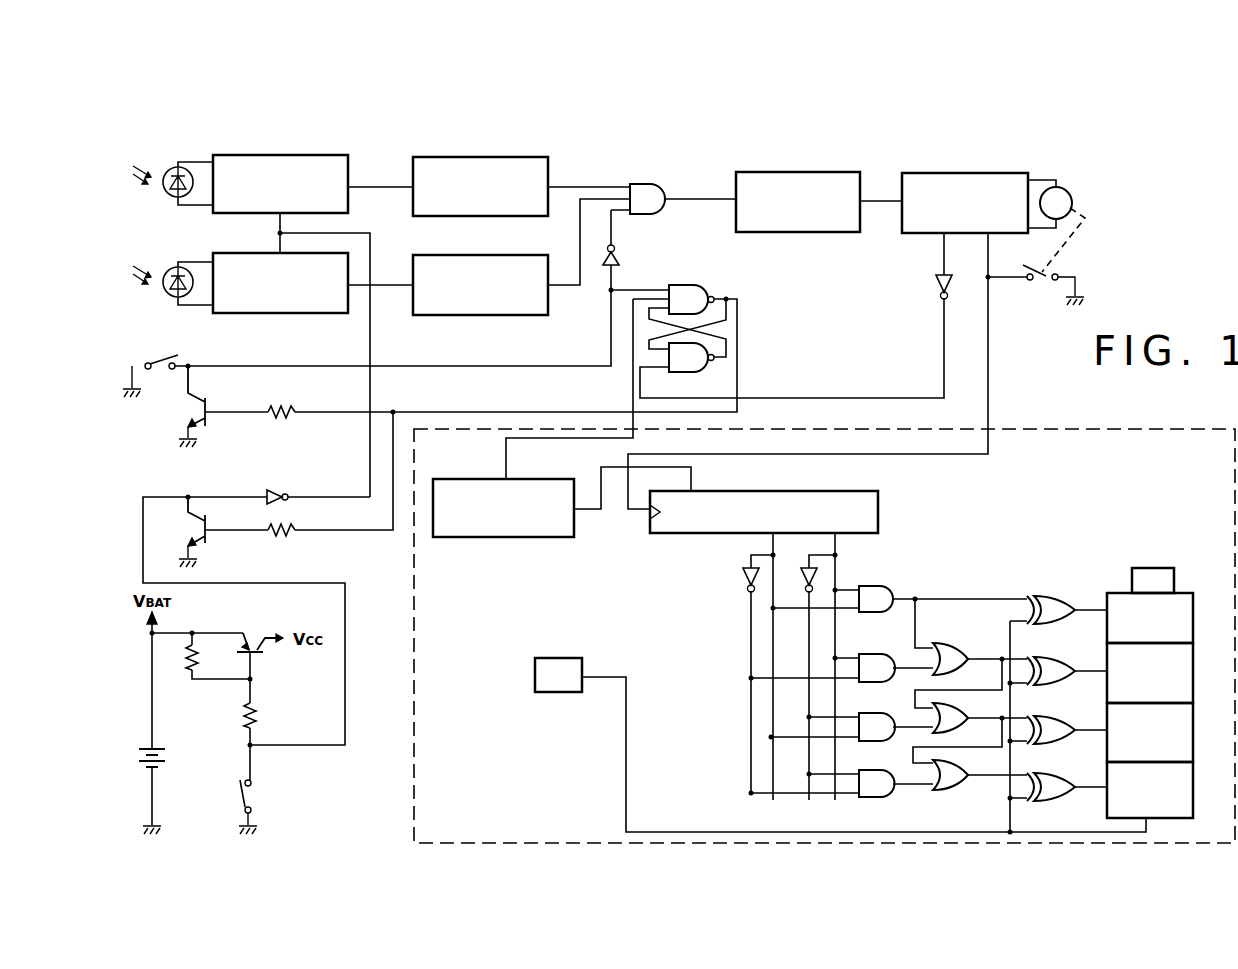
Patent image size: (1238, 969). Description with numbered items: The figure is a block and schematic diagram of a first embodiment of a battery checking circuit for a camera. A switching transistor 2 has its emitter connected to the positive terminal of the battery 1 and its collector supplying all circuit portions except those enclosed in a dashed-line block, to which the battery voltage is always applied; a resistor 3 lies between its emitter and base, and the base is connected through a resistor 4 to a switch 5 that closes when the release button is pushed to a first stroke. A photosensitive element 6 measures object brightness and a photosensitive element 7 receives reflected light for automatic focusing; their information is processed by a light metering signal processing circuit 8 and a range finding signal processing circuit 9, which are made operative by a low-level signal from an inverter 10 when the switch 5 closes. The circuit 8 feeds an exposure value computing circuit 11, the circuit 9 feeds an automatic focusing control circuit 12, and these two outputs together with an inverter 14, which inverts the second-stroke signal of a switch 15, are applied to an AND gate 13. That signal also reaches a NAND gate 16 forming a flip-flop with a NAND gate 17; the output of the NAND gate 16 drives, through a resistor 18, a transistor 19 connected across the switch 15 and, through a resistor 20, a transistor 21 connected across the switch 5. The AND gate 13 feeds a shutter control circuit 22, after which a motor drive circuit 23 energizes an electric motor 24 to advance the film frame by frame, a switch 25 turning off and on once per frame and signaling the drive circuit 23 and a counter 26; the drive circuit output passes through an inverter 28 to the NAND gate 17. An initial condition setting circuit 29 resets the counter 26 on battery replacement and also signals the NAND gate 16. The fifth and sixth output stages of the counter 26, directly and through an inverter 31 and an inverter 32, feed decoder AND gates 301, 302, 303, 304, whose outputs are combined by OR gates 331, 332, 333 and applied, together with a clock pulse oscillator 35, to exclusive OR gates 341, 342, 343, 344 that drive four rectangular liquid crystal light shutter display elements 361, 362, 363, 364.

The battery 1 is at (169, 757).
The switching transistor 2 is at (250, 645).
The resistor 3 is at (199, 667).
The resistor 4 is at (262, 722).
The switch 5 is at (258, 800).
The photosensitive element 6 is at (169, 168).
The photosensitive element 7 is at (169, 268).
The light metering signal processing circuit 8 is at (216, 157).
The range finding signal processing circuit 9 is at (217, 255).
The inverter 10 is at (283, 494).
The exposure value computing circuit 11 is at (411, 172).
The automatic focusing control circuit 12 is at (533, 257).
The AND gate 13 is at (667, 209).
The inverter 14 is at (622, 261).
The switch 15 is at (162, 381).
The NAND gate 16 is at (689, 287).
The NAND gate 17 is at (684, 373).
The resistor 18 is at (293, 408).
The transistor 19 is at (193, 413).
The resistor 20 is at (295, 534).
The transistor 21 is at (192, 535).
The shutter control circuit 22 is at (863, 177).
The motor drive circuit 23 is at (1022, 175).
The electric motor 24 is at (1075, 206).
The switch 25 is at (1040, 292).
The counter 26 is at (880, 495).
The inverter 28 is at (933, 286).
The initial condition setting circuit 29 is at (553, 480).
The inverter 31 is at (742, 578).
The inverter 32 is at (802, 579).
The clock pulse oscillator 35 is at (577, 657).
The AND gate 301 is at (887, 587).
The AND gate 302 is at (880, 654).
The AND gate 303 is at (870, 715).
The AND gate 304 is at (867, 773).
The OR gate 331 is at (950, 643).
The OR gate 332 is at (966, 710).
The OR gate 333 is at (966, 768).
The exclusive OR gate 341 is at (1070, 602).
The exclusive OR gate 342 is at (1063, 664).
The exclusive OR gate 343 is at (1063, 724).
The exclusive OR gate 344 is at (1063, 781).
The liquid crystal light shutter display element 361 is at (1194, 608).
The liquid crystal light shutter display element 362 is at (1194, 666).
The liquid crystal light shutter display element 363 is at (1194, 724).
The liquid crystal light shutter display element 364 is at (1194, 781).